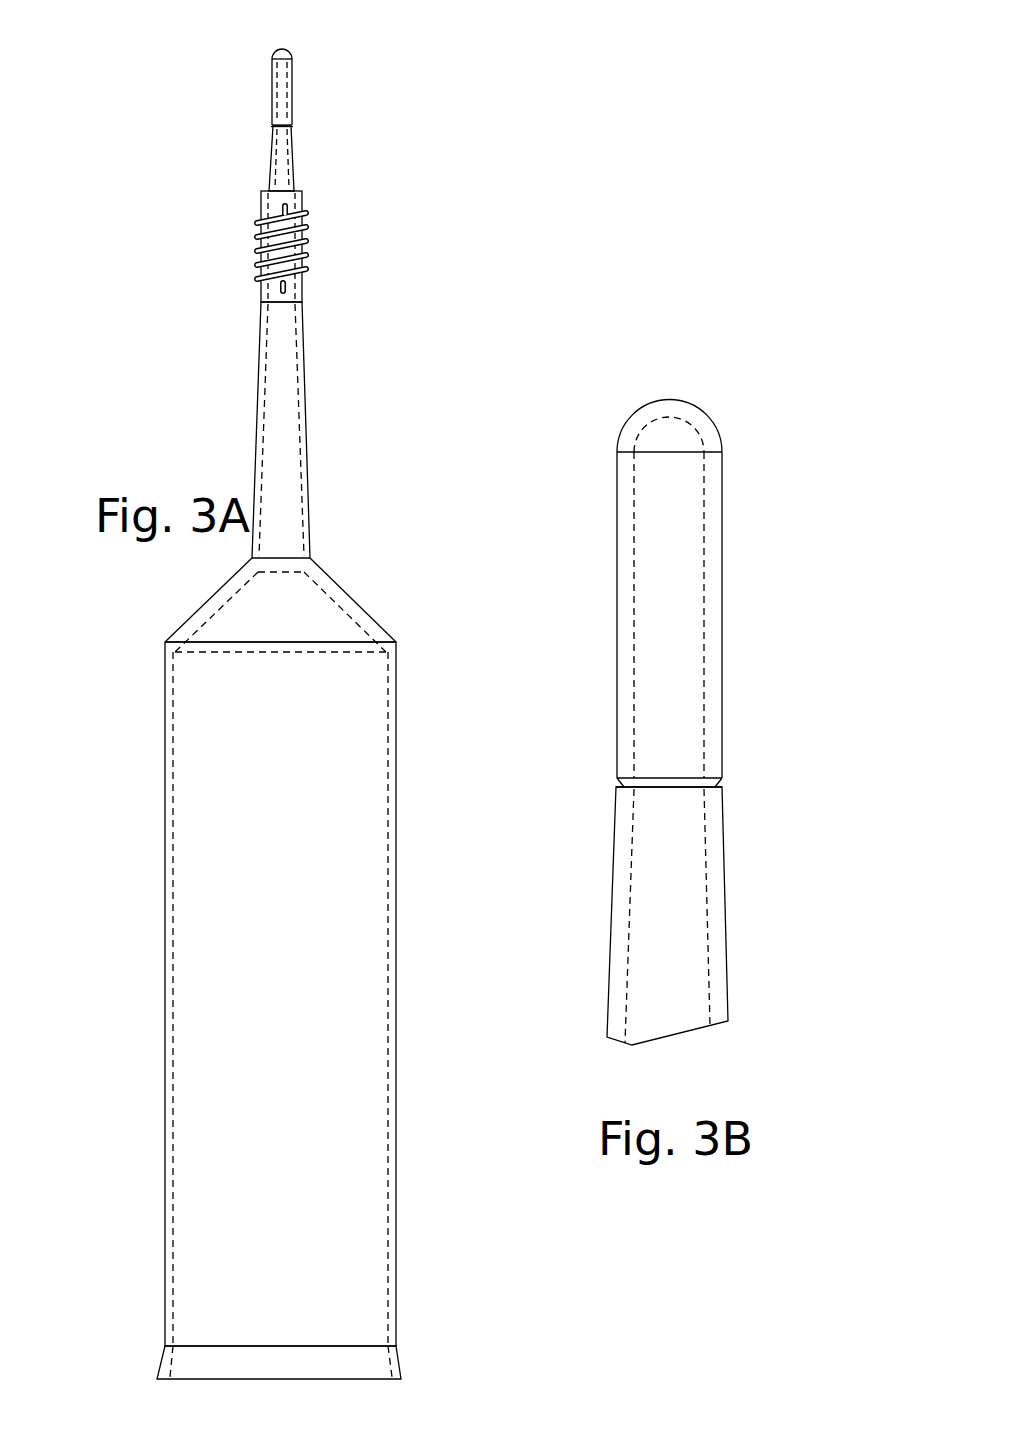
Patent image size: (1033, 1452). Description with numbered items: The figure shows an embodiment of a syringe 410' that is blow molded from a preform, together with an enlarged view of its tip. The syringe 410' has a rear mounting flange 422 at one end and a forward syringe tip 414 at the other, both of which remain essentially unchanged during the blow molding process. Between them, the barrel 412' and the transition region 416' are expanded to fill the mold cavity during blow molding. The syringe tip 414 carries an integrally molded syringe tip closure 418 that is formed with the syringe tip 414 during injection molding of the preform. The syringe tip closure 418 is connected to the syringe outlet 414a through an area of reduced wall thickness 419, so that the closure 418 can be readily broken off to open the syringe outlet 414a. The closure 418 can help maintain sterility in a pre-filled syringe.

In FIG. 3A, the syringe 410' is at (224, 994).
In FIG. 3A, the barrel 412' is at (332, 999).
In FIG. 3A, the syringe tip 414 is at (345, 358).
In FIG. 3B, the syringe tip 414 is at (769, 775).
In FIG. 3A, the syringe outlet 414a is at (283, 145).
In FIG. 3B, the syringe outlet 414a is at (680, 830).
In FIG. 3A, the transition region 416' is at (308, 581).
In FIG. 3A, the syringe tip closure 418 is at (315, 60).
In FIG. 3B, the syringe tip closure 418 is at (747, 437).
In FIG. 3A, the area of reduced wall thickness 419 is at (272, 125).
In FIG. 3B, the area of reduced wall thickness 419 is at (615, 778).
In FIG. 3A, the rear mounting flange 422 is at (403, 1378).